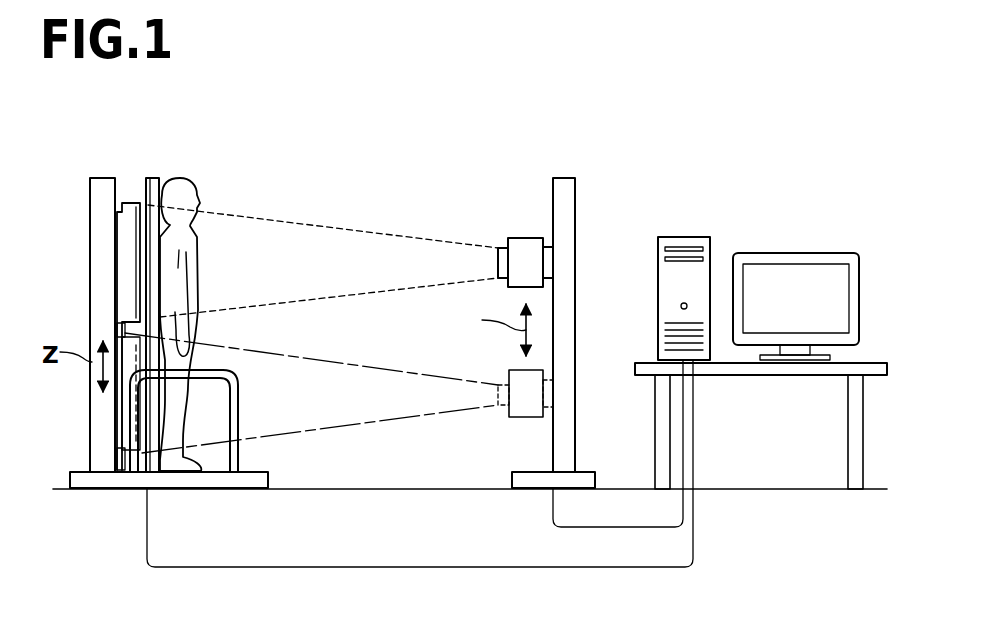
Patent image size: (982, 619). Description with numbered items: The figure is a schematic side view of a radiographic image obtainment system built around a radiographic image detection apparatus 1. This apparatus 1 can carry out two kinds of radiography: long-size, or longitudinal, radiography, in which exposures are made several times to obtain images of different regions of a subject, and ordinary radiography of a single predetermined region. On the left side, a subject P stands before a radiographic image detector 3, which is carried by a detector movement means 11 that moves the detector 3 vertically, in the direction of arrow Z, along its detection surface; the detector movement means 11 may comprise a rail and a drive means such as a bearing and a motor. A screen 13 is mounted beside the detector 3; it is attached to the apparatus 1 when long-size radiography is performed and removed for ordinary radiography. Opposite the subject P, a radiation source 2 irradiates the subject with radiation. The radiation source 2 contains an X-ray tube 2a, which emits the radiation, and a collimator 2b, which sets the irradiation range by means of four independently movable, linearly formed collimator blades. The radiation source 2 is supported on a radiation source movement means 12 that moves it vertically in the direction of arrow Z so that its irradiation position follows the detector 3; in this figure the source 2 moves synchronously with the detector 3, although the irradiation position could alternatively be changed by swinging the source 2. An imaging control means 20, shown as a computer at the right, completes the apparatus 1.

The radiographic image detection apparatus 1 is at (386, 120).
The detector movement means 11 is at (101, 182).
The radiographic image detector 3 is at (128, 206).
The screen 13 is at (152, 180).
The subject person P is at (178, 181).
The radiation source 2 is at (478, 289).
The X-ray tube 2a is at (518, 247).
The collimator 2b is at (498, 270).
The radiation source movement means 12 is at (565, 193).
The imaging control means 20 is at (678, 236).